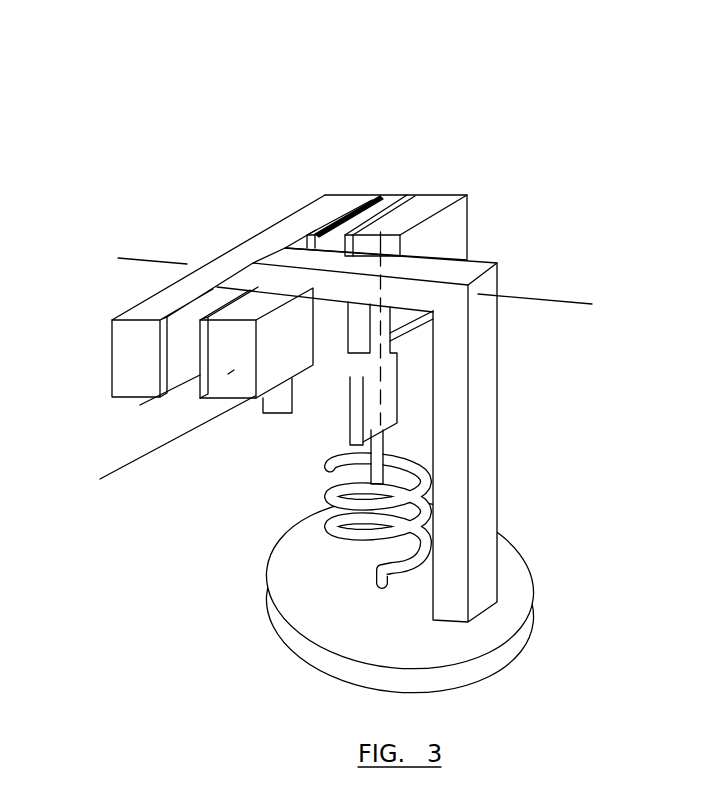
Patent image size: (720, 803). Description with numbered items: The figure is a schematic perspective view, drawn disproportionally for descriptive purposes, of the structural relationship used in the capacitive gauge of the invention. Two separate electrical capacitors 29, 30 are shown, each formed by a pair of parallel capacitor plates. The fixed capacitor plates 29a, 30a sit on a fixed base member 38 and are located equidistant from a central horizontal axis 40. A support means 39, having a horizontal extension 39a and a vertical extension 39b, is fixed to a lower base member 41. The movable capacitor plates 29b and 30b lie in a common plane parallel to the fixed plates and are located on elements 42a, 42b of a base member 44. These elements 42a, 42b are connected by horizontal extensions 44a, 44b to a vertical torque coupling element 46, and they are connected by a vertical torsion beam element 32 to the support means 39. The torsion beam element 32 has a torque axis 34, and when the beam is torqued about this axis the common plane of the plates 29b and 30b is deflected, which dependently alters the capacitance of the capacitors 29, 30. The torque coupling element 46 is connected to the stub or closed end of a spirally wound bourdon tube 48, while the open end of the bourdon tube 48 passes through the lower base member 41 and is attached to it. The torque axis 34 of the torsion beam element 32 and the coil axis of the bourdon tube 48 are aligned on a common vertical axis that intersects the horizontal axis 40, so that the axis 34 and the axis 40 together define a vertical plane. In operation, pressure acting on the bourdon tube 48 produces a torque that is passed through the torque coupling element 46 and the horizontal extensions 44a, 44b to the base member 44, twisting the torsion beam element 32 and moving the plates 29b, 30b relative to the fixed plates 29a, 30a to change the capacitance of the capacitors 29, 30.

The electrical capacitor 29 is at (173, 257).
The capacitor plate 29a is at (177, 310).
The capacitor plate 29b is at (238, 300).
The electrical capacitor 30 is at (404, 161).
The capacitor plate 30a is at (352, 234).
The capacitor plate 30b is at (407, 202).
The torsion beam element 32 is at (232, 372).
The torque axis 34 is at (350, 235).
The fixed base member 38 is at (255, 253).
The support means 39 is at (413, 395).
The horizontal extension 39a is at (480, 264).
The vertical extension 39b is at (490, 451).
The central horizontal axis 40 is at (132, 257).
The lower base member 41 is at (485, 660).
The element of base member 42a is at (200, 378).
The element of base member 42b is at (477, 258).
The base member 44 is at (318, 375).
The horizontal extension 44a is at (357, 328).
The horizontal extension 44b is at (412, 341).
The vertical torque coupling element 46 is at (348, 418).
The spirally wound bourdon tube 48 is at (337, 540).